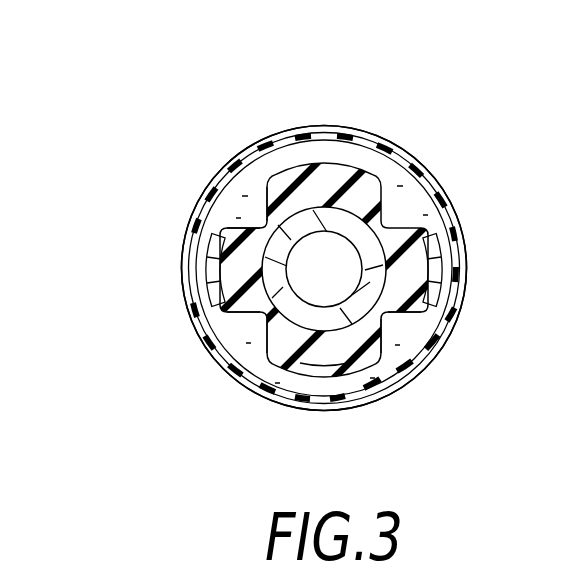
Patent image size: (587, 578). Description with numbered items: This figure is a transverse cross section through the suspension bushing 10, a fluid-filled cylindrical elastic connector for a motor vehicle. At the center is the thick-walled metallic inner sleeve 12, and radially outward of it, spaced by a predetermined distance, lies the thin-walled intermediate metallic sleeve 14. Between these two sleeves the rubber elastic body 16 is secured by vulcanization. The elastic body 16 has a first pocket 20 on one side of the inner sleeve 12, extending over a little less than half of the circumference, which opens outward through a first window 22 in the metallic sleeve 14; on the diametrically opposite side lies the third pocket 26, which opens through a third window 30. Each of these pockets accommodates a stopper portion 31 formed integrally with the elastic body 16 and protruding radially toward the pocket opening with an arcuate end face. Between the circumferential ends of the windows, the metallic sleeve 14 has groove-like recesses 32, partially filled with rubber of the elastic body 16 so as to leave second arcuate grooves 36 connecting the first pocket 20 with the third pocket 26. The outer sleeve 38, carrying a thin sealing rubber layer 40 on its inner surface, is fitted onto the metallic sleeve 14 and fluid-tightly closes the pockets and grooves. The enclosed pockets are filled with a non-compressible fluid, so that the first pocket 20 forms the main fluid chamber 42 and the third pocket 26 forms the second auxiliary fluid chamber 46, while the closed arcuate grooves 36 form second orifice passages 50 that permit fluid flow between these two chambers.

The suspension bushing 10 is at (440, 119).
The inner sleeve 12 is at (350, 317).
The metallic sleeve 14 is at (462, 290).
The elastic body 16 is at (216, 284).
The first pocket 20 is at (402, 227).
The first window 22 is at (224, 190).
The third pocket 26 is at (232, 362).
The third window 30 is at (425, 340).
The stopper portion 31 is at (331, 172).
The groove-like recesses 32 is at (200, 240).
The second arcuate grooves 36 is at (460, 240).
The outer sleeve 38 is at (258, 392).
The sealing rubber layer 40 is at (392, 397).
The main fluid chamber 42 is at (284, 160).
The second auxiliary fluid chamber 46 is at (342, 390).
The second orifice passages 50 is at (197, 262).